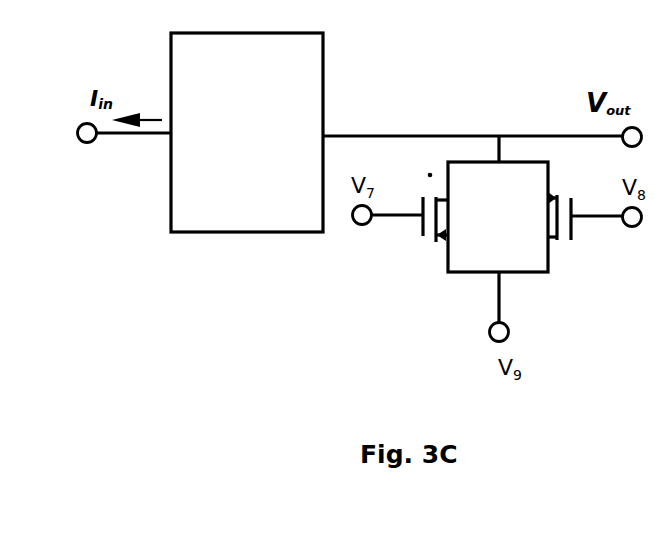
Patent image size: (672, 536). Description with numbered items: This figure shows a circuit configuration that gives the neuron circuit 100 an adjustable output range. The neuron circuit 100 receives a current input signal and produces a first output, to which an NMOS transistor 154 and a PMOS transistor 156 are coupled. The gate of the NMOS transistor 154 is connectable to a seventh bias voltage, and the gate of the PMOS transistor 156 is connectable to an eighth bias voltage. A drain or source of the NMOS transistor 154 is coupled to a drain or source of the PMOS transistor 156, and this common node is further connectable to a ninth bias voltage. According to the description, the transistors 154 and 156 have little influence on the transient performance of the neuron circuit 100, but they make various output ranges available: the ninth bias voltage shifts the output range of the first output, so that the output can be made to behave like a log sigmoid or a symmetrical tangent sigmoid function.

The neuron circuit 100 is at (247, 133).
The NMOS transistor 154 is at (410, 224).
The PMOS transistor 156 is at (585, 235).